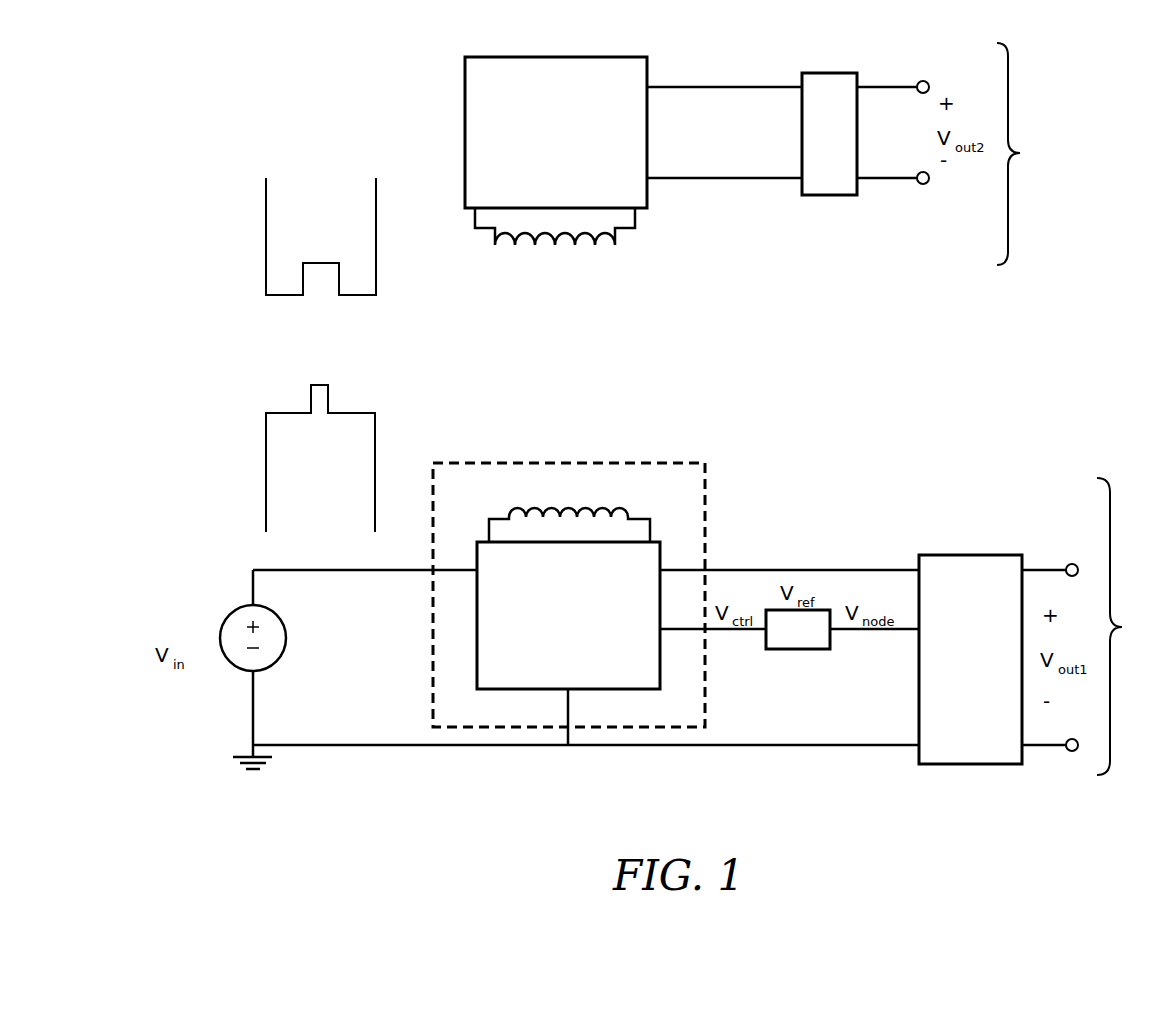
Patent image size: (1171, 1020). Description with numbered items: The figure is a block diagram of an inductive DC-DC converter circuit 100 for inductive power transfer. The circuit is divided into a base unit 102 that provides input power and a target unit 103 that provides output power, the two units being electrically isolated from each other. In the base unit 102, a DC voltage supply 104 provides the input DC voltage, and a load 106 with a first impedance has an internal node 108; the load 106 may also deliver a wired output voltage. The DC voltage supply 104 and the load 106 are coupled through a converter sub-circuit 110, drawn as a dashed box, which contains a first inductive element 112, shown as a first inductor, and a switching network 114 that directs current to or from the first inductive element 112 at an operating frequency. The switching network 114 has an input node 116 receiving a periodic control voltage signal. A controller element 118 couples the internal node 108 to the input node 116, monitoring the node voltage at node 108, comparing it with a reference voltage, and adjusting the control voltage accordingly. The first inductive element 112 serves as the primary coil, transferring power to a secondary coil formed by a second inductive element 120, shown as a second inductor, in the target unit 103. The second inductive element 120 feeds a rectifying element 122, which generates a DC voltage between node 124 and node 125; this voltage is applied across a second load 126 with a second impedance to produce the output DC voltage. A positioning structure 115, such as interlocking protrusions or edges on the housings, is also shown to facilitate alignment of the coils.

The inductive DC-DC converter circuit 100 is at (723, 820).
The base unit 102 is at (1134, 626).
The target unit 103 is at (1033, 154).
The DC voltage supply 104 is at (286, 620).
The load 106 is at (972, 555).
The internal node 108 is at (919, 636).
The converter sub-circuit 110 is at (494, 728).
The first inductive element 112 is at (545, 503).
The switching network 114 is at (600, 692).
The positioning structure 115 is at (376, 295).
The input node 116 is at (660, 628).
The controller element 118 is at (795, 650).
The second inductive element 120 is at (503, 246).
The rectifying element 122 is at (555, 56).
The node 124 is at (650, 86).
The node 125 is at (650, 180).
The second load 126 is at (830, 72).